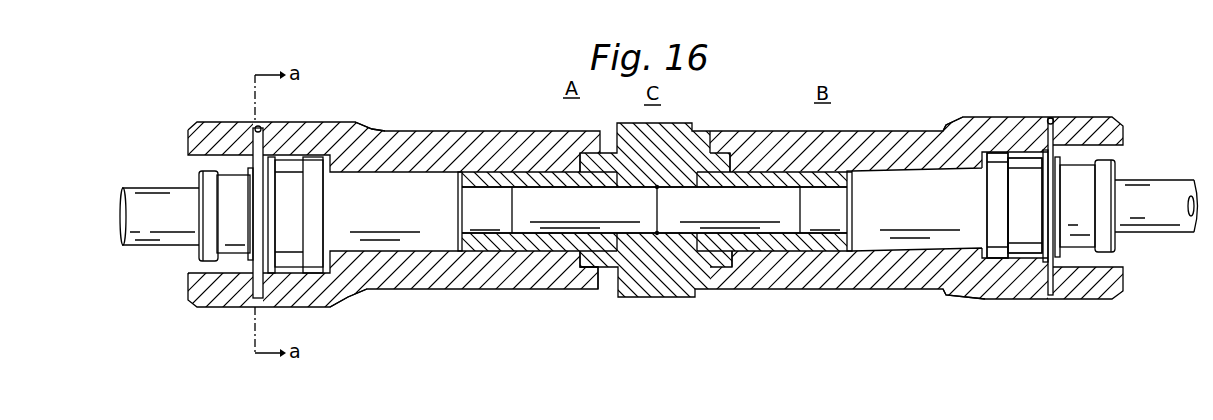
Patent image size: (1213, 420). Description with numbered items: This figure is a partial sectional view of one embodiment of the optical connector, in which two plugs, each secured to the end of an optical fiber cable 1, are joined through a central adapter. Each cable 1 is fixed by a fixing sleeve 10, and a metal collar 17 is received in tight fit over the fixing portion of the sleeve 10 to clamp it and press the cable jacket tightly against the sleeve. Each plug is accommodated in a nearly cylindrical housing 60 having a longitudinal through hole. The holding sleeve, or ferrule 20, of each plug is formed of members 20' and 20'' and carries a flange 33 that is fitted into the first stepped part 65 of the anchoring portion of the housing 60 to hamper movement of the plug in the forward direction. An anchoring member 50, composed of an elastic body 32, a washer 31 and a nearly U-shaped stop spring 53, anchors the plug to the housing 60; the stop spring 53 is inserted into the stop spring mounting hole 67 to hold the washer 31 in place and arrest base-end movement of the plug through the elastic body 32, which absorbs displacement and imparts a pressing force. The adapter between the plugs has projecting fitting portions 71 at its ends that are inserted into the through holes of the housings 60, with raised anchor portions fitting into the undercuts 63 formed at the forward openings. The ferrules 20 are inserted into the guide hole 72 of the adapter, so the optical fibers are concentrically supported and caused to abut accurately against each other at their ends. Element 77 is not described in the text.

The optical fiber cable 1 is at (146, 185).
The fixing sleeve 10 is at (208, 182).
The second collar 17 is at (232, 184).
The holding sleeve 20 is at (648, 151).
The member of holding sleeve 20' is at (655, 169).
The member of holding sleeve 20'' is at (638, 164).
The washer 31 is at (275, 270).
The elastic body 32 is at (293, 256).
The flange 33 is at (313, 167).
The anchoring member 50 is at (1118, 86).
The stop spring 53 is at (258, 284).
The housing 60 is at (439, 294).
The undercut 63 is at (577, 268).
The first stepped part 65 is at (368, 166).
The stop spring mounting hole 67 is at (1052, 296).
The fitting portion 71 is at (523, 248).
The guide hole 72 is at (657, 236).
The notch 77 is at (599, 270).